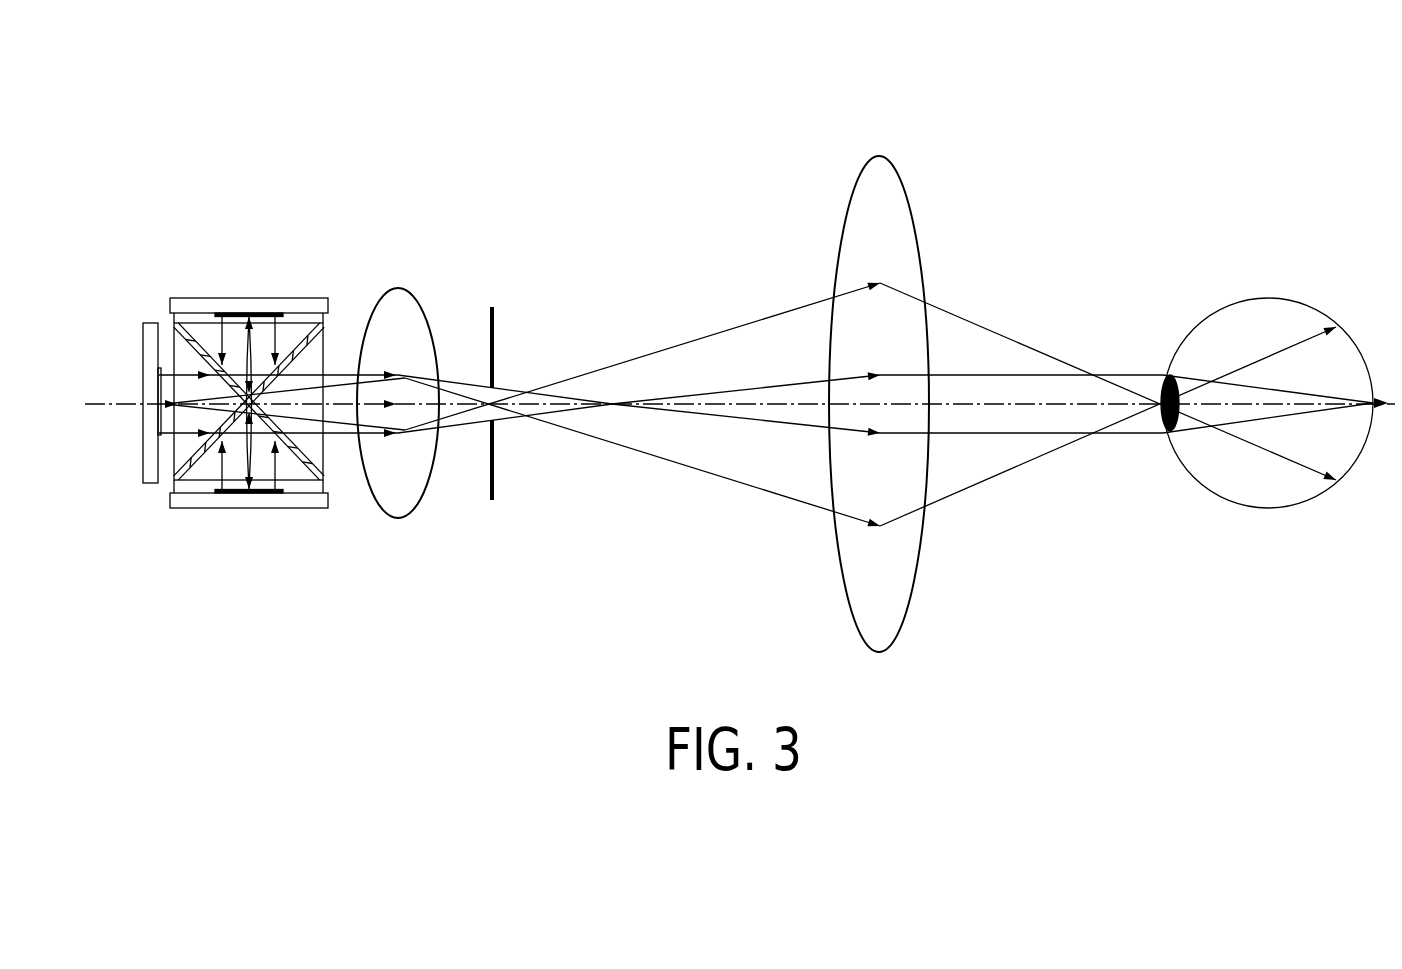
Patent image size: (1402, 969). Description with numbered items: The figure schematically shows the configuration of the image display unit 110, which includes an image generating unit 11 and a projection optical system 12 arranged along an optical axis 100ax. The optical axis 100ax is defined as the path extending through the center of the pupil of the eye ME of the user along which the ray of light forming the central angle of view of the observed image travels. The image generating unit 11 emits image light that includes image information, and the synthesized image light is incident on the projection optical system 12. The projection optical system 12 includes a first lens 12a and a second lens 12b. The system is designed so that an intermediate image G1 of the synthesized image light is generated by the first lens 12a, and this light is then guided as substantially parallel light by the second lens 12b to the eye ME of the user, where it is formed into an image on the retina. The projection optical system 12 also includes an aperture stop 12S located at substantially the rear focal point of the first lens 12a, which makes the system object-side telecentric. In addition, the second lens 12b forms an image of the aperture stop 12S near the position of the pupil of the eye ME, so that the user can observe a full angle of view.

The image display unit 110 is at (1005, 128).
The optical axis 100ax is at (101, 403).
The image generating unit 11 is at (242, 275).
The projection optical system 12 is at (885, 88).
The first lens 12a is at (395, 305).
The second lens 12b is at (862, 200).
The aperture stop 12S is at (493, 463).
The intermediate image G1 is at (612, 405).
The eye ME is at (1260, 313).